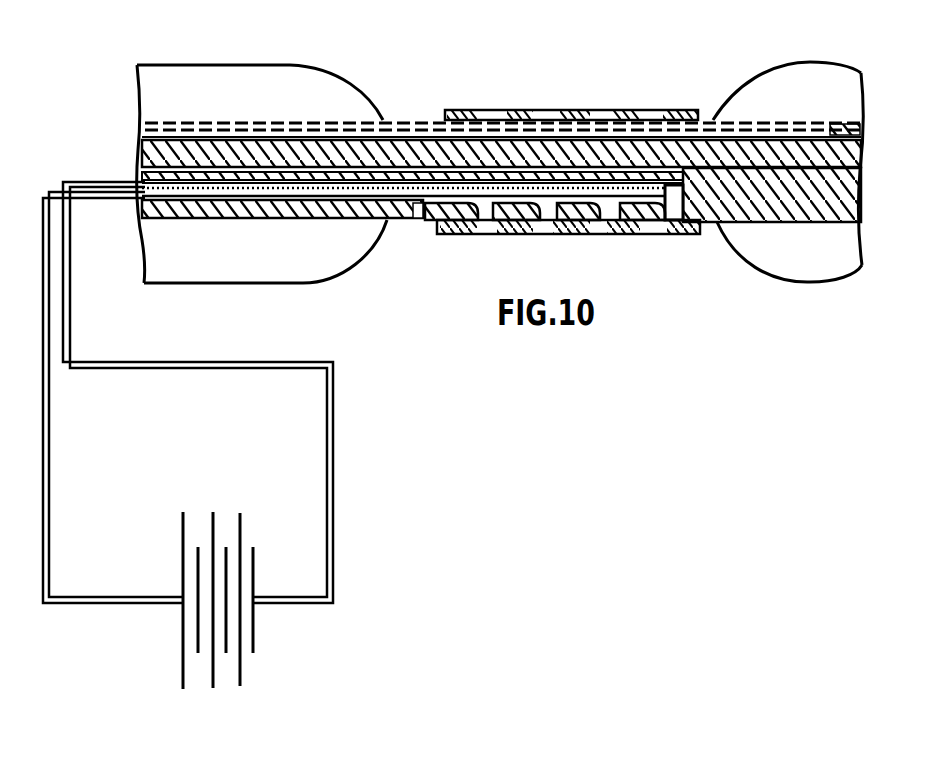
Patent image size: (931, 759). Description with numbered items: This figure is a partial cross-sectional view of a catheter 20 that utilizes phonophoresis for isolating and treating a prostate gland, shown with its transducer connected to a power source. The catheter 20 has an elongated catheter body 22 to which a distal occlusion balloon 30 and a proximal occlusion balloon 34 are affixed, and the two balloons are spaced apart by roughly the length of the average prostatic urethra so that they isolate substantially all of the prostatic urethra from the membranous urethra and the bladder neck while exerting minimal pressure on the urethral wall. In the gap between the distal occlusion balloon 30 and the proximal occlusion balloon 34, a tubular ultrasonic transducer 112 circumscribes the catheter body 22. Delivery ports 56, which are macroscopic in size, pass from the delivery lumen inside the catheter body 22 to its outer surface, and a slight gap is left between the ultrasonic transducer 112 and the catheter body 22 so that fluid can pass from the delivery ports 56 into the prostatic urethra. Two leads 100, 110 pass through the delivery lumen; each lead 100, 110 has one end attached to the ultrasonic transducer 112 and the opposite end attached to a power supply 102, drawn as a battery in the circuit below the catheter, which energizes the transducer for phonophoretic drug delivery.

The catheter 20 is at (98, 127).
The catheter body 22 is at (404, 124).
The distal occlusion balloon 30 is at (755, 80).
The proximal occlusion balloon 34 is at (289, 65).
The delivery ports 56 is at (485, 234).
The lead 100 is at (50, 510).
The power supply 102 is at (183, 673).
The lead 110 is at (333, 458).
The tubular ultrasonic transducer 112 is at (517, 110).